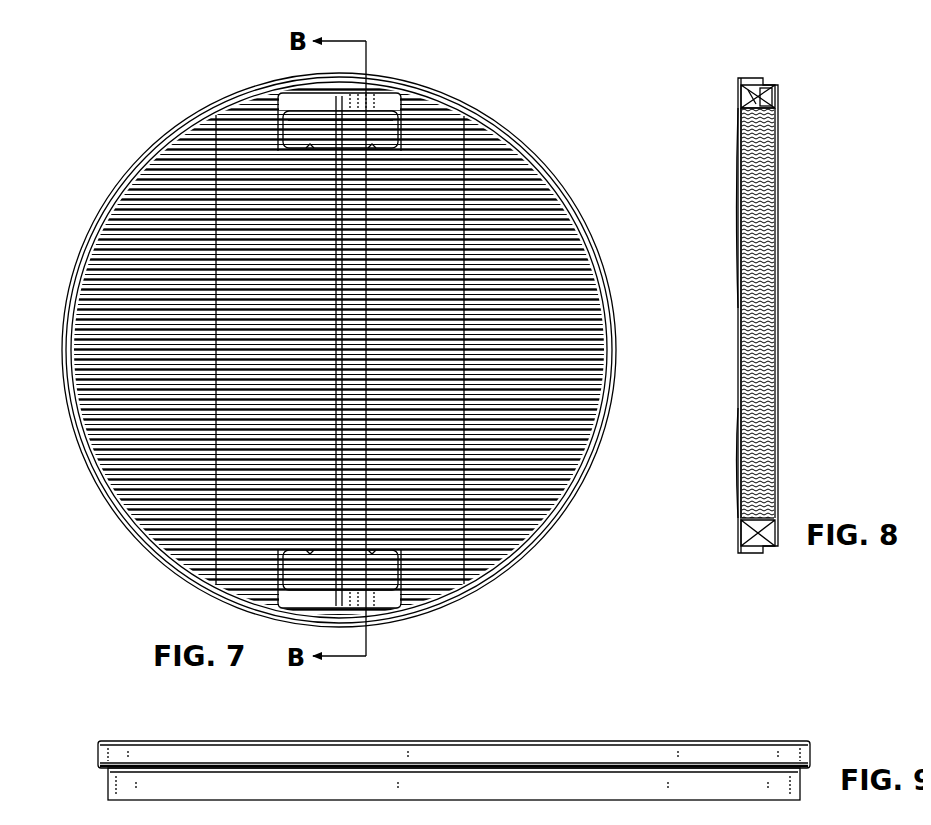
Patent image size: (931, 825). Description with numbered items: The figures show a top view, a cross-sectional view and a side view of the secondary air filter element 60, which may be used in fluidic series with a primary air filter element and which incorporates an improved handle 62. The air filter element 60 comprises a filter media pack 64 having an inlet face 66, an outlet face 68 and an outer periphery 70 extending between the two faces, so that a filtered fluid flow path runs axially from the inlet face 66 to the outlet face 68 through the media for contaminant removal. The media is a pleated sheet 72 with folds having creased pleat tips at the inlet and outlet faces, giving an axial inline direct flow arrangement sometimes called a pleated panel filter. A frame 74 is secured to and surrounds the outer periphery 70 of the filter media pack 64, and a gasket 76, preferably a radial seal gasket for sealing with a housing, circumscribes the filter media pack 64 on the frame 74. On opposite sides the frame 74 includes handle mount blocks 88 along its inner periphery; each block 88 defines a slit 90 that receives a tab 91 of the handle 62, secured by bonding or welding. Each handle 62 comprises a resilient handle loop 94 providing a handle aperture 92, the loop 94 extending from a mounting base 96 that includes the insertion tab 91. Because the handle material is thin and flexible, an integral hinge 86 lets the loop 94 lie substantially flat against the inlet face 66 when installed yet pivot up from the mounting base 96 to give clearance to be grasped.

In FIG. 7, the secondary air filter element 60 is at (533, 105).
In FIG. 8, the secondary air filter element 60 is at (820, 108).
In FIG. 9, the secondary air filter element 60 is at (70, 734).
In FIG. 7, the handle 62 is at (286, 96).
In FIG. 8, the handle 62 is at (732, 130).
In FIG. 7, the filter media pack 64 is at (113, 283).
In FIG. 8, the filter media pack 64 is at (768, 245).
In FIG. 8, the inlet face 66 is at (732, 380).
In FIG. 8, the outlet face 68 is at (772, 368).
In FIG. 8, the outer periphery 70 is at (752, 105).
In FIG. 8, the pleated sheet 72 is at (758, 222).
In FIG. 7, the frame 74 is at (108, 488).
In FIG. 8, the frame 74 is at (754, 538).
In FIG. 9, the frame 74 is at (127, 780).
In FIG. 7, the gasket 76 is at (130, 530).
In FIG. 8, the gasket 76 is at (744, 72).
In FIG. 9, the gasket 76 is at (802, 745).
In FIG. 7, the integral hinge 86 is at (270, 108).
In FIG. 7, the handle mount block 88 is at (402, 92).
In FIG. 8, the slit 90 is at (754, 93).
In FIG. 8, the tab 91 is at (747, 87).
In FIG. 7, the handle aperture 92 is at (285, 122).
In FIG. 7, the handle loop 94 is at (302, 142).
In FIG. 7, the mounting base 96 is at (300, 95).